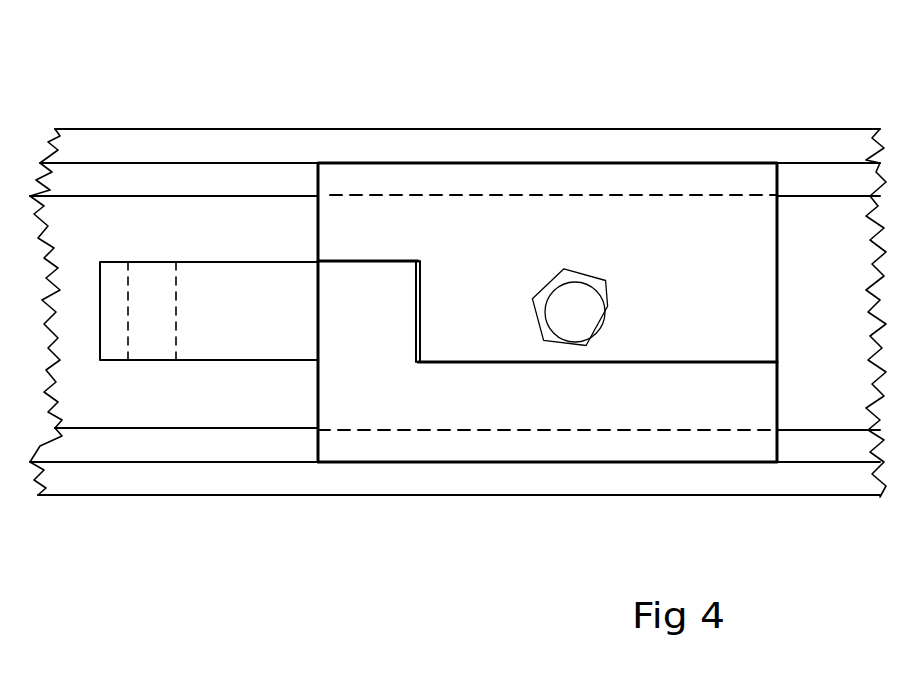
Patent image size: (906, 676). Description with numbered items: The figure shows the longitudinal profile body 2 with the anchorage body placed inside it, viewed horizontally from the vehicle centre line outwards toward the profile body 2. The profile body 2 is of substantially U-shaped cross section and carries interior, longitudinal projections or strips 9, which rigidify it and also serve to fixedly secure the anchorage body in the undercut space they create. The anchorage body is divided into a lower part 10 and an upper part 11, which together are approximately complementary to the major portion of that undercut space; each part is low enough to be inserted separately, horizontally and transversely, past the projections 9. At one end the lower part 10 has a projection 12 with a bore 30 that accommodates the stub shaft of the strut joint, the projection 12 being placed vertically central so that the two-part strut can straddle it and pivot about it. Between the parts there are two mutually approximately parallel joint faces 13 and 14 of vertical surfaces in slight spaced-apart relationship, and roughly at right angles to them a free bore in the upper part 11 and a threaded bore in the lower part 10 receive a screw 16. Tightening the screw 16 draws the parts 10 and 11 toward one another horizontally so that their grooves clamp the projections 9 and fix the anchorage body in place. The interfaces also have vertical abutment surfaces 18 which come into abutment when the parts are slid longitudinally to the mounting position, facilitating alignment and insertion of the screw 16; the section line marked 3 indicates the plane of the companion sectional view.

The profile body 2 is at (166, 145).
The projections or strips 9 is at (809, 180).
The upper part 11 is at (518, 225).
The joint face 13 is at (360, 258).
The vertical abutment surfaces 18 is at (415, 315).
The joint face 14 is at (620, 364).
The lower part 10 is at (742, 397).
The screw 16 is at (582, 305).
The projection 12 is at (225, 343).
The bore 30 is at (143, 343).
The section line 3- 3 is at (758, 60).